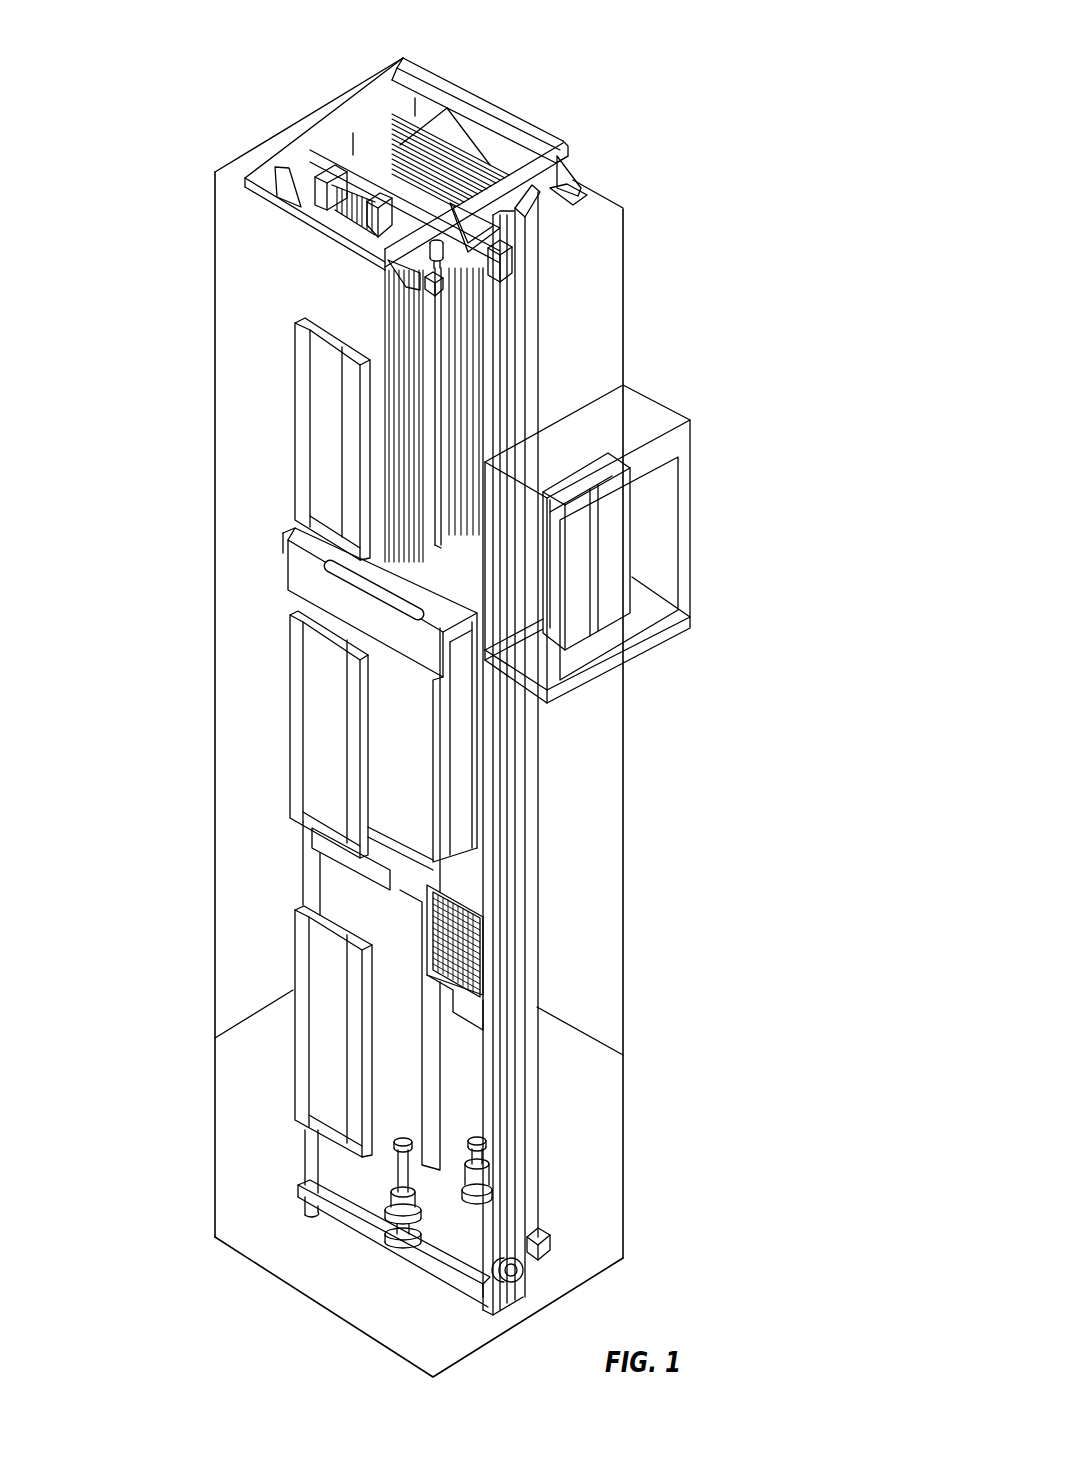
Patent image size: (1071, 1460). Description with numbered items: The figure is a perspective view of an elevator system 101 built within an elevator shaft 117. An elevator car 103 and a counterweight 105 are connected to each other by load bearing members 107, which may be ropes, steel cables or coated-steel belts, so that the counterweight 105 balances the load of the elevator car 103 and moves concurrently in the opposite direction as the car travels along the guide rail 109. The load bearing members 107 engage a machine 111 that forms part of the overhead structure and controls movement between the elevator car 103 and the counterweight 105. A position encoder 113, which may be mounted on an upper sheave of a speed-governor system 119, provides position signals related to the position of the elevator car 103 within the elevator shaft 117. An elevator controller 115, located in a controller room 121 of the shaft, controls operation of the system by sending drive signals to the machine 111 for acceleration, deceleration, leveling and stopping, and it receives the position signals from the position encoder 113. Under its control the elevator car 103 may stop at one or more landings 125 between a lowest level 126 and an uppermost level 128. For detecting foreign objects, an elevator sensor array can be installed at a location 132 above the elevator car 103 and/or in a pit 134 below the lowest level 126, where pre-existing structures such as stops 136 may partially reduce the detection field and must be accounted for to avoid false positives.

The elevator system 101 is at (658, 86).
The elevator car 103 is at (418, 762).
The counterweight 105 is at (470, 965).
The load bearing members 107 is at (428, 431).
The guide rail 109 is at (508, 882).
The machine 111 is at (325, 168).
The position encoder 113 is at (510, 262).
The elevator controller 115 is at (625, 558).
The elevator shaft 117 is at (271, 884).
The speed-governor system 119 is at (545, 318).
The controller room 121 is at (702, 416).
The landings 125 is at (295, 427).
The lowest level 126 is at (273, 1125).
The uppermost level 128 is at (281, 330).
The location 132 is at (426, 537).
The pit 134 is at (330, 1173).
The stops 136 is at (416, 1175).